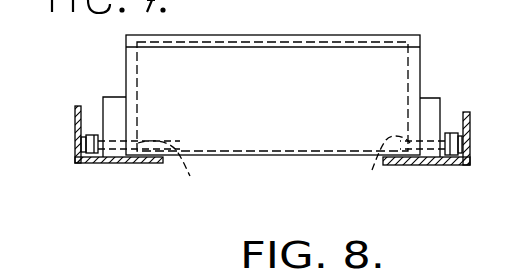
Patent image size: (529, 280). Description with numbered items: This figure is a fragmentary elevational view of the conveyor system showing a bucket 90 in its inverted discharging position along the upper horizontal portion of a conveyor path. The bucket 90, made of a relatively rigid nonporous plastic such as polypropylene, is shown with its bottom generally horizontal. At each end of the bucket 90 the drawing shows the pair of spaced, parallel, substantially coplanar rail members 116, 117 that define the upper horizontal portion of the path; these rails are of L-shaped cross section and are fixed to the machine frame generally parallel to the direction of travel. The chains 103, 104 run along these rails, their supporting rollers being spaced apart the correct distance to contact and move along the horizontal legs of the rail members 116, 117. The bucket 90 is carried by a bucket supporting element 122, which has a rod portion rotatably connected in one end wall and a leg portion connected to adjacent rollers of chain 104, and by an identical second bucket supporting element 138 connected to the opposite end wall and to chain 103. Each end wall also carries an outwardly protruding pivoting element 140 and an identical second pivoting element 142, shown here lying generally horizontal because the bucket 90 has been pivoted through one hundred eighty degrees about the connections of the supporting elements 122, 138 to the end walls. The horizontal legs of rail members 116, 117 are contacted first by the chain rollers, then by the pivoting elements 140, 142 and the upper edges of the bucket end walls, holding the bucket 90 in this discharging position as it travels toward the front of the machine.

The bucket 90 is at (308, 33).
The chain 103 is at (92, 120).
The chain 104 is at (450, 130).
The rail member 116 is at (110, 163).
The rail member 117 is at (423, 165).
The bucket supporting element 122 is at (372, 168).
The second bucket supporting element 138 is at (186, 170).
The pivoting element 140 is at (433, 100).
The second pivoting element 142 is at (115, 97).